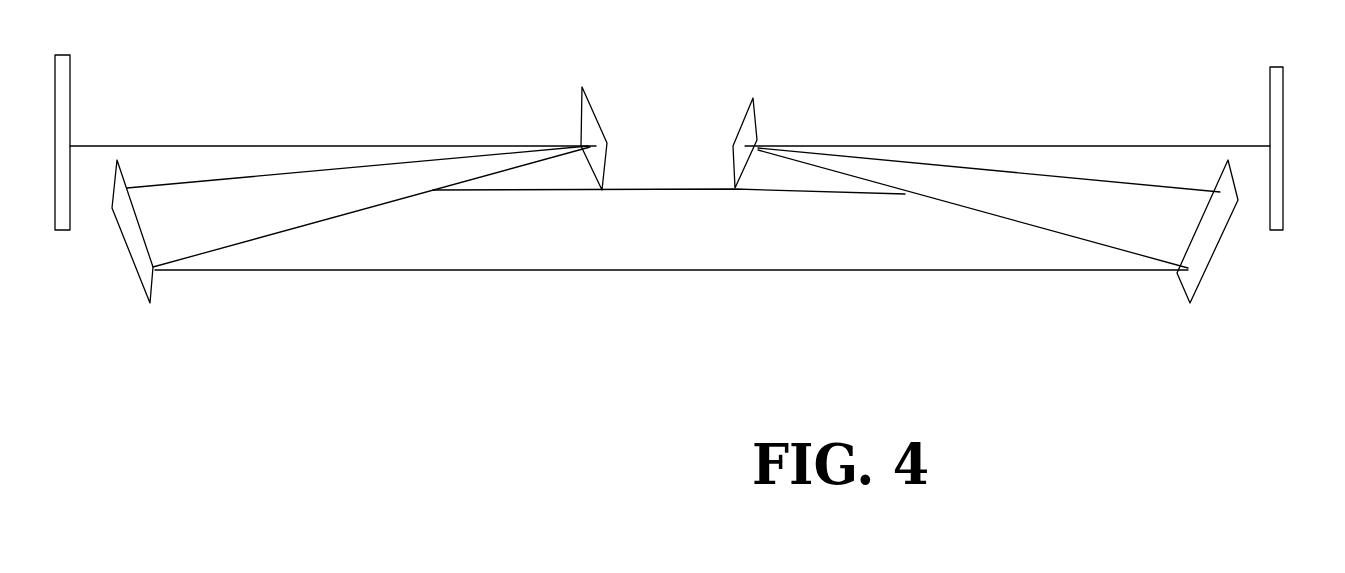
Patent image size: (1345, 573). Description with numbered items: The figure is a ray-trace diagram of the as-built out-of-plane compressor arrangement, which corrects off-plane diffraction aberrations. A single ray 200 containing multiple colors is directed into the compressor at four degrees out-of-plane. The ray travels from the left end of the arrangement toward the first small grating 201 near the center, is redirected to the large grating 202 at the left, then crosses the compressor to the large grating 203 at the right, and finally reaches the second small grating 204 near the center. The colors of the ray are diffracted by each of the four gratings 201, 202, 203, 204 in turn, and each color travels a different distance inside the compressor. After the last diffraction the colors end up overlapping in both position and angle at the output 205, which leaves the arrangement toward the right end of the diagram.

The single ray 200 is at (333, 120).
The grating 201 is at (633, 123).
The grating 202 is at (181, 250).
The grating 203 is at (1241, 237).
The grating 204 is at (797, 133).
The output 205 is at (1007, 117).